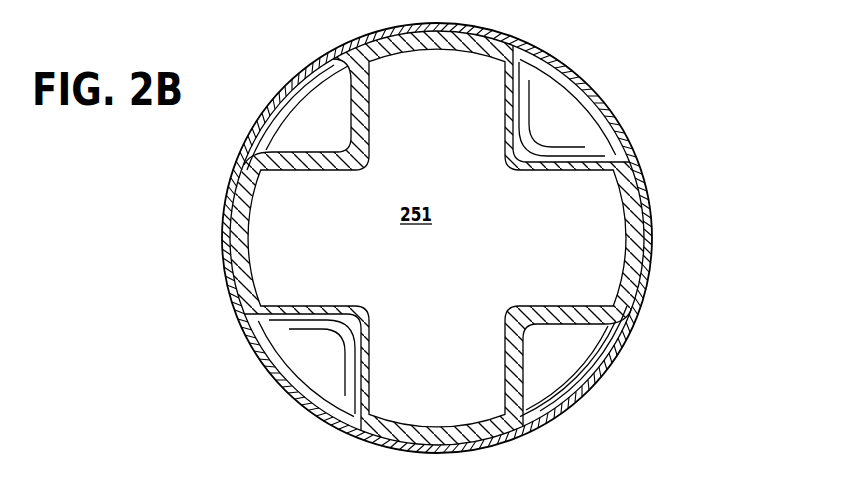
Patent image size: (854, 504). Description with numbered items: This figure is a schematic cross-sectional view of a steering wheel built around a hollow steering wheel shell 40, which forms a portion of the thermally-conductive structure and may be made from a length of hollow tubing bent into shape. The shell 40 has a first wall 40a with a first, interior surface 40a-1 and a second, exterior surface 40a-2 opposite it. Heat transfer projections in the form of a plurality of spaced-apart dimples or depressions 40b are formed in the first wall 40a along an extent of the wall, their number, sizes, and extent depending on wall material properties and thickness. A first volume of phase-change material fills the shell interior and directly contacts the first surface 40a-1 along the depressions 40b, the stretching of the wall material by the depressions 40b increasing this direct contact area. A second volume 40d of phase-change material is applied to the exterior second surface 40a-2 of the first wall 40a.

The steering wheel shell 40 is at (611, 119).
The first wall 40a is at (240, 240).
The first surface 40a-1 is at (640, 213).
The second surface 40a-2 is at (643, 248).
The depressions 40b is at (555, 353).
The second volume of PCM 40d is at (589, 86).